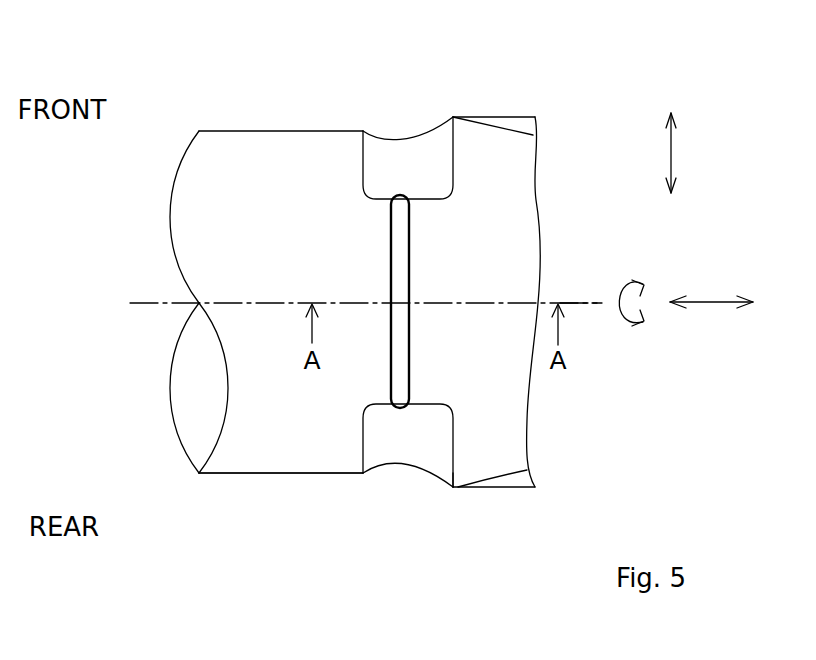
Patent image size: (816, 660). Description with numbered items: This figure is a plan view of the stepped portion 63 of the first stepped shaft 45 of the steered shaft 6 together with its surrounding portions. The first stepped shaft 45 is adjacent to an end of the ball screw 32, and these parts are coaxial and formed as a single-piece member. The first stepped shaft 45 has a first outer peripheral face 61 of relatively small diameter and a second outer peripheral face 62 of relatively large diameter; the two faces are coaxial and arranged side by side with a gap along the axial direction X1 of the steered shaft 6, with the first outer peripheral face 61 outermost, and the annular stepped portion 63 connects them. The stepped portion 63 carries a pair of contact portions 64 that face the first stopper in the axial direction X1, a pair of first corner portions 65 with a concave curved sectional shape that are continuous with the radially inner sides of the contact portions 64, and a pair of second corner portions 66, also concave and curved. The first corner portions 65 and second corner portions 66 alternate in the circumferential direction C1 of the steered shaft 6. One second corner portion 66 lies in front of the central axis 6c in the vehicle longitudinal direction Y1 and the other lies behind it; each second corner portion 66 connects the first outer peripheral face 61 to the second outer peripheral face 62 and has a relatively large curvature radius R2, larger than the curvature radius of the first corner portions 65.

The steered shaft 6 is at (168, 372).
The central axis 6c is at (586, 306).
The ball screw 32 is at (518, 491).
The first stepped shaft 45 is at (226, 477).
The first outer peripheral face 61 is at (293, 475).
The second outer peripheral face 62 is at (460, 489).
The stepped portion 63 is at (506, 321).
The contact portions 64 is at (403, 242).
The first corner portions 65 is at (400, 281).
The second corner portions 66 is at (427, 174).
The curvature radius R2 is at (432, 133).
The circumferential direction C1 is at (630, 335).
The axial direction X1 is at (712, 301).
The vehicle longitudinal direction Y1 is at (674, 150).